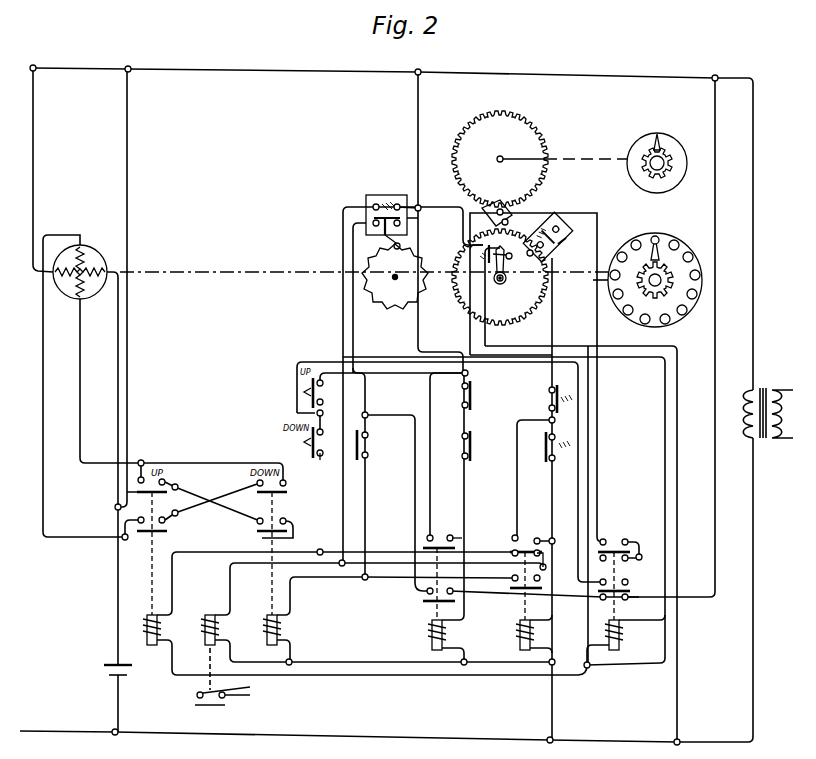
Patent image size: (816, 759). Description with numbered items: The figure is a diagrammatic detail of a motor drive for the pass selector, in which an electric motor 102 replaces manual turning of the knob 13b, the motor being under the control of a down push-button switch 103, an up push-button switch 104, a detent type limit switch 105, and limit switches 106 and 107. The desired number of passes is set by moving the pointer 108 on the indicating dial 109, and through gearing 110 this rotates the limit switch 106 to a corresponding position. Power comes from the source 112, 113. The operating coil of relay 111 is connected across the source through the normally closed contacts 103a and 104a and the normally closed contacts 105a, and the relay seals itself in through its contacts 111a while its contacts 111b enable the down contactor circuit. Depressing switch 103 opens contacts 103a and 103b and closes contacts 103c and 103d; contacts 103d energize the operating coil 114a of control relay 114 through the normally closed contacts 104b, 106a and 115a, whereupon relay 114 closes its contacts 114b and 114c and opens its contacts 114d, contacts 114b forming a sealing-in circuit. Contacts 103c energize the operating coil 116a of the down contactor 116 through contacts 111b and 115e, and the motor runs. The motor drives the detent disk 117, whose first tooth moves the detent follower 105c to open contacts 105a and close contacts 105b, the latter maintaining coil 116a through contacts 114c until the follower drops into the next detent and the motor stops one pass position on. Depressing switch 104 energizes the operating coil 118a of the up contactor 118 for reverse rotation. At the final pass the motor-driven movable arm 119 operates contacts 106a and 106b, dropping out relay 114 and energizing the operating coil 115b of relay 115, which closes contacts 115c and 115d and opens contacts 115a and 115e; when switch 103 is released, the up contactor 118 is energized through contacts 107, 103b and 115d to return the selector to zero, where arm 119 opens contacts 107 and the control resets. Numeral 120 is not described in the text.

The electric motor 102 is at (91, 250).
The down push-button switch 103 is at (304, 442).
The normally closed contacts 103a is at (462, 437).
The normally closed contacts 103b is at (317, 456).
The normally open contacts 103c is at (369, 458).
The normally open contacts 103d is at (550, 461).
The up push-button switch 104 is at (304, 392).
The normally closed contacts 104a is at (462, 386).
The normally closed contacts 104b is at (549, 408).
The detent type limit switch 105 is at (395, 195).
The normally closed contacts 105a is at (401, 226).
The normally open contacts 105b is at (373, 204).
The detent follower 105c is at (401, 246).
The limit switch 106 is at (555, 230).
The normally closed contacts 106a is at (534, 254).
The normally closed contacts 106b is at (561, 243).
The limit switch 107 is at (506, 252).
The pointer 108 is at (660, 143).
The indicating dial 109 is at (633, 152).
The gearing 110 is at (488, 210).
The relay 111 is at (432, 645).
The normally open contacts 111a is at (443, 527).
The normally open contacts 111b is at (426, 594).
The source 112 is at (544, 75).
The source 113 is at (444, 738).
The control relay 114 is at (520, 608).
The operating coil 114a is at (519, 633).
The normally open contacts 114b is at (530, 528).
The normally open contacts 114c is at (512, 580).
The normally closed contacts 114d is at (512, 552).
The relay 115 is at (611, 613).
The normally closed contacts 115a is at (629, 560).
The operating coil 115b is at (620, 633).
The normally open contacts 115c is at (606, 540).
The normally open contacts 115d is at (601, 584).
The normally closed contacts 115e is at (626, 600).
The down contactor 116 is at (270, 593).
The operating coil 116a is at (279, 632).
The detent disk 117 is at (397, 309).
The up contactor 118 is at (150, 579).
The operating coil 118a is at (147, 620).
The movable arm 119 is at (506, 279).
The relay housing 120 is at (310, 362).
The knob 13b is at (672, 256).